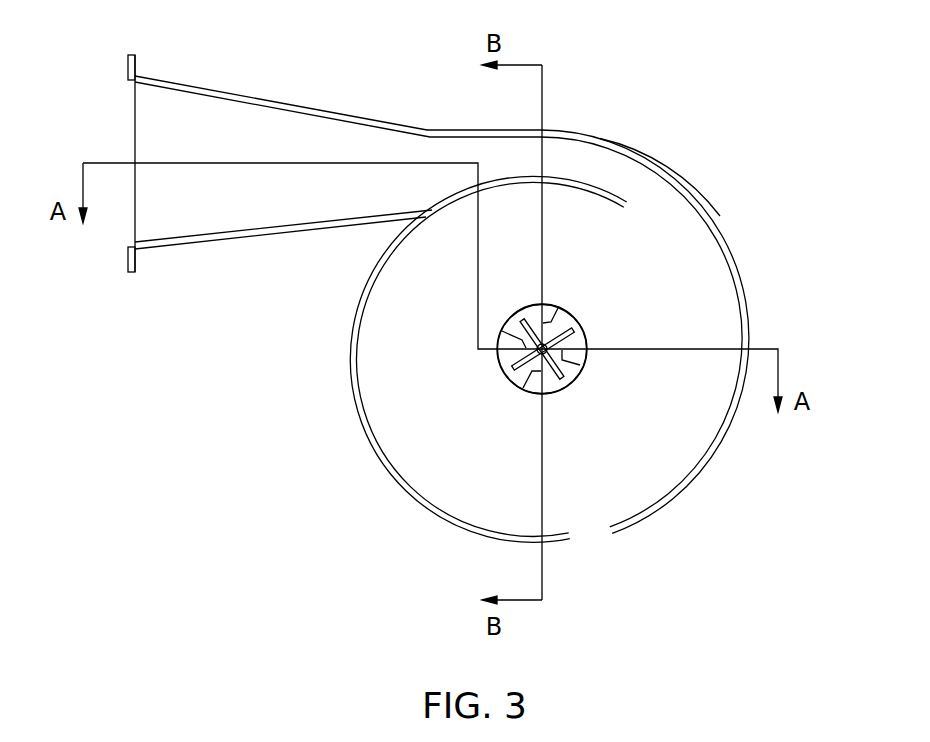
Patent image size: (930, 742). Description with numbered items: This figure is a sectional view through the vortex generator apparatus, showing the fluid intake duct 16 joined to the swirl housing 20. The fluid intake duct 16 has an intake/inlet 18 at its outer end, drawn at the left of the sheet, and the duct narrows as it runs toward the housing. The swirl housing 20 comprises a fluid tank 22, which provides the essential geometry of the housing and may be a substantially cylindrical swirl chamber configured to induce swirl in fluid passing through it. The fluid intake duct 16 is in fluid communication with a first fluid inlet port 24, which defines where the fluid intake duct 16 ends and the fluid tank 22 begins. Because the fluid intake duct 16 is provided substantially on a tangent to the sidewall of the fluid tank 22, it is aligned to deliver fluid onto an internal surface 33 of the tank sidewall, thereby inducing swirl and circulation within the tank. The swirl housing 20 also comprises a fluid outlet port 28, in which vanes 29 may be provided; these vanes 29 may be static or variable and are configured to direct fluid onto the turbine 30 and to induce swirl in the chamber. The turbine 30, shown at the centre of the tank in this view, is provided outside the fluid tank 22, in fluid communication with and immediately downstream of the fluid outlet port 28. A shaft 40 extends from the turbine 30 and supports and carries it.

The fluid intake duct 16 is at (205, 88).
The intake/inlet 18 is at (133, 133).
The swirl housing 20 is at (724, 238).
The fluid tank 22 is at (750, 298).
The first fluid inlet port 24 is at (541, 150).
The fluid outlet port 28 is at (500, 367).
The vanes 29 is at (565, 388).
The turbine 30 is at (582, 330).
The internal surface 33 is at (683, 197).
The shaft 40 is at (533, 363).